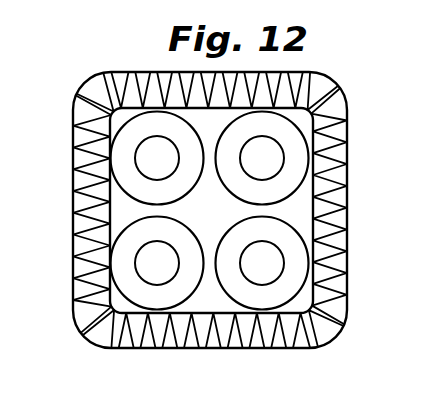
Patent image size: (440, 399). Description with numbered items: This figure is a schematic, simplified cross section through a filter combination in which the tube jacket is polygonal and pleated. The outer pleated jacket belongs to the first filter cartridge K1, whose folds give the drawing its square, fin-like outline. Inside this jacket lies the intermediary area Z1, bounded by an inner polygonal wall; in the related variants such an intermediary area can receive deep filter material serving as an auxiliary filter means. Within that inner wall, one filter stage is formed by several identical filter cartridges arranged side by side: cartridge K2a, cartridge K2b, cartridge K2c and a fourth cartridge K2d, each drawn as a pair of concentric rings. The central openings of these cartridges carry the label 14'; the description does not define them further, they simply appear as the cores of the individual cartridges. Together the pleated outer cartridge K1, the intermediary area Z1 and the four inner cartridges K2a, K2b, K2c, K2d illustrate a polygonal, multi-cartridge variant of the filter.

The filter cartridge 1 K1 is at (331, 101).
The cartridge 2a K2a is at (130, 142).
The cartridge 2b K2b is at (130, 245).
The cartridge 2c K2c is at (322, 138).
The fourth cooling chamber K2d is at (296, 250).
The tubular bore / conductor passage 14' is at (209, 210).
The intermediary area Z1 is at (303, 197).